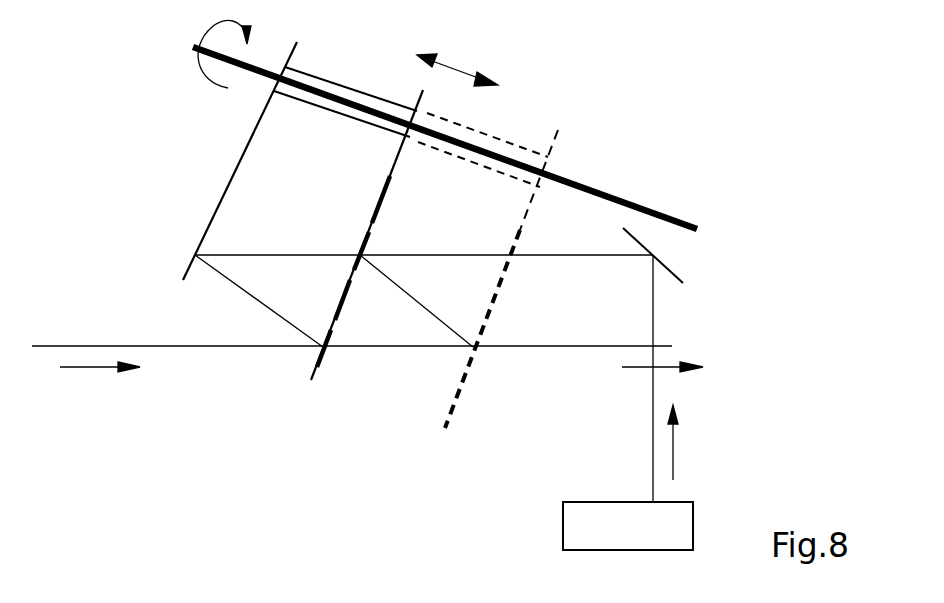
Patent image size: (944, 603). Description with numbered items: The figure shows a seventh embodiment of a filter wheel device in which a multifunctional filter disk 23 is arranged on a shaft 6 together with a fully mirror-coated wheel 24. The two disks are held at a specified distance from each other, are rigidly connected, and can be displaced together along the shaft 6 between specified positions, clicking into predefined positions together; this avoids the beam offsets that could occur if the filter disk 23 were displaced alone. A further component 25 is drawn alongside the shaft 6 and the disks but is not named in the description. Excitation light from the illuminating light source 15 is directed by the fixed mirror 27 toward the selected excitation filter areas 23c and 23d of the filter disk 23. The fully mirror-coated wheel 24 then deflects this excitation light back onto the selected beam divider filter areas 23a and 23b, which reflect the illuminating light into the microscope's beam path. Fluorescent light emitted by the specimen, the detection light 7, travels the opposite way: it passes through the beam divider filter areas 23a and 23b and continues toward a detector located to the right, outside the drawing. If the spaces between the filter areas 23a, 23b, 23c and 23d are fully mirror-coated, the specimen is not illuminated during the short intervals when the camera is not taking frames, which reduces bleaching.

The shaft 6 is at (628, 201).
The detection light 7 is at (205, 347).
The illuminating light source 15 is at (628, 477).
The multifunctional filter disk 23 is at (421, 92).
The beam divider filter area 23a is at (318, 357).
The beam divider filter area 23b is at (344, 304).
The excitation filter area 23c is at (360, 252).
The excitation filter area 23d is at (381, 198).
The fully mirror-coated wheel 24 is at (208, 222).
The guide rails 25 is at (348, 86).
The fixed mirror 27 is at (677, 283).